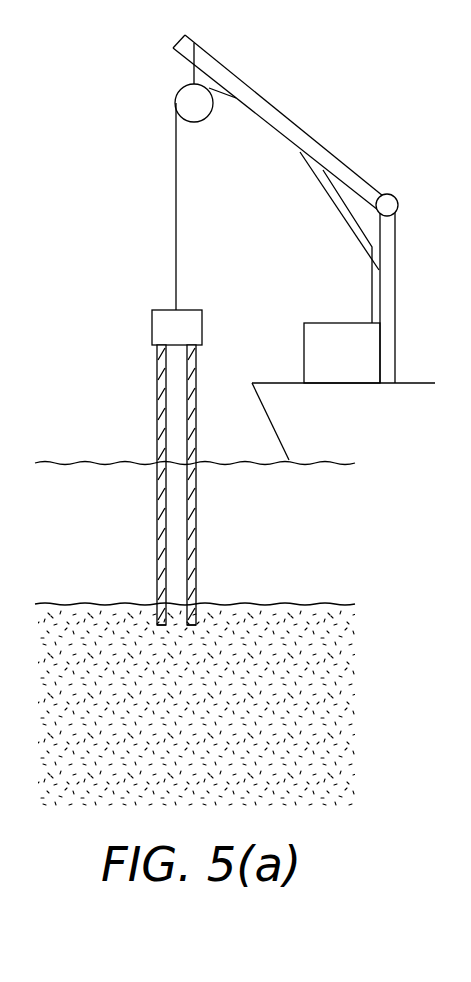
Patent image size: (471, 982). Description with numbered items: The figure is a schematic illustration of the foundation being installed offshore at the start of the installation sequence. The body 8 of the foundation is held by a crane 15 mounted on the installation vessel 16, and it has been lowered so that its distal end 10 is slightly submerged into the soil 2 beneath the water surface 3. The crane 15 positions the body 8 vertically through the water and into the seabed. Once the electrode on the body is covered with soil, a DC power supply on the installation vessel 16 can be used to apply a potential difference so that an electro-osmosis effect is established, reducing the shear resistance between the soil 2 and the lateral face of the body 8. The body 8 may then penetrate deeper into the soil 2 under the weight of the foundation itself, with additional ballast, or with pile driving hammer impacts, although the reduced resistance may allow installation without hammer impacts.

The crane 15 is at (234, 82).
The installation vessel 16 is at (415, 383).
The body 8 is at (158, 357).
The distal end 10 is at (163, 627).
The water surface 3 is at (80, 475).
The soil 2 is at (90, 648).